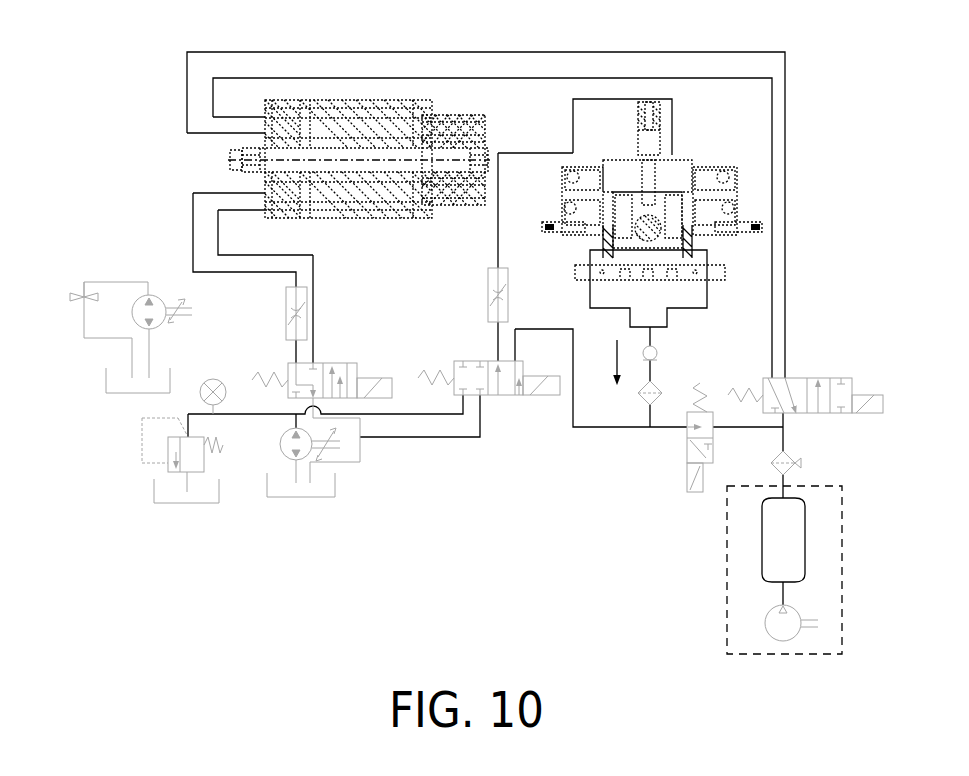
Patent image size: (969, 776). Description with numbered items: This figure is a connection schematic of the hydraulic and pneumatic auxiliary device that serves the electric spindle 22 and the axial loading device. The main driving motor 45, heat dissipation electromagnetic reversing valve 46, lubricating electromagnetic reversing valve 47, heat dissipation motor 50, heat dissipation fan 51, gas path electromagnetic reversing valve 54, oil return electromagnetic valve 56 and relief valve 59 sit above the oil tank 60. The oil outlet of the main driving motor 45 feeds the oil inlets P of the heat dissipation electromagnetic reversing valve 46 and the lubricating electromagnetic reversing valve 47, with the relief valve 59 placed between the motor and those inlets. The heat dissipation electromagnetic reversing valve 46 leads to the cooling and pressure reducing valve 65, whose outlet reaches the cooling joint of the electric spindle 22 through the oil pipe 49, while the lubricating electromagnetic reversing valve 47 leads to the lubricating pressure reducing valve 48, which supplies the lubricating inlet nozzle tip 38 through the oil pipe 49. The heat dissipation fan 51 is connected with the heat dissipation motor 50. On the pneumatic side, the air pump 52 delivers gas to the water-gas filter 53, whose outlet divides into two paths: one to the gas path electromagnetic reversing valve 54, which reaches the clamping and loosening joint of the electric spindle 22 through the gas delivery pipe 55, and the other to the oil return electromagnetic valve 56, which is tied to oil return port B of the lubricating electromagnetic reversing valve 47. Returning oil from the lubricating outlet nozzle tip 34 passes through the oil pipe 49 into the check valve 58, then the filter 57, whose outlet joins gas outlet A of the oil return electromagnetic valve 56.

The electric spindle 22 is at (325, 107).
The lubricating inlet nozzle tip 38 is at (672, 155).
The gas delivery pipe 55 is at (772, 183).
The lubricating outlet nozzle tip 34 is at (707, 250).
The check valve 58 is at (656, 349).
The gas path electromagnetic reversing valve 54 is at (788, 393).
The water-gas filter 53 is at (790, 460).
The air pump 52 is at (830, 578).
The oil return electromagnetic valve 56 is at (697, 444).
The filter 57 is at (643, 402).
The lubricating electromagnetic reversing valve 47 is at (508, 394).
The lubricating pressure reducing valve 48 is at (490, 295).
The cooling and pressure reducing valve 65 is at (298, 305).
The heat dissipation electromagnetic reversing valve 46 is at (290, 377).
The oil pipe 49 is at (193, 253).
The heat dissipation fan 51 is at (82, 298).
The heat dissipation motor 50 is at (135, 313).
The relief valve 59 is at (185, 457).
The main driving motor 45 is at (292, 445).
The oil tank 60 is at (322, 481).